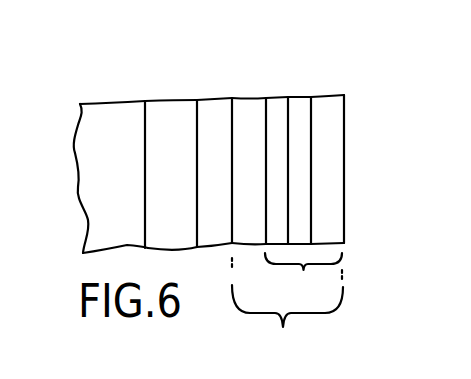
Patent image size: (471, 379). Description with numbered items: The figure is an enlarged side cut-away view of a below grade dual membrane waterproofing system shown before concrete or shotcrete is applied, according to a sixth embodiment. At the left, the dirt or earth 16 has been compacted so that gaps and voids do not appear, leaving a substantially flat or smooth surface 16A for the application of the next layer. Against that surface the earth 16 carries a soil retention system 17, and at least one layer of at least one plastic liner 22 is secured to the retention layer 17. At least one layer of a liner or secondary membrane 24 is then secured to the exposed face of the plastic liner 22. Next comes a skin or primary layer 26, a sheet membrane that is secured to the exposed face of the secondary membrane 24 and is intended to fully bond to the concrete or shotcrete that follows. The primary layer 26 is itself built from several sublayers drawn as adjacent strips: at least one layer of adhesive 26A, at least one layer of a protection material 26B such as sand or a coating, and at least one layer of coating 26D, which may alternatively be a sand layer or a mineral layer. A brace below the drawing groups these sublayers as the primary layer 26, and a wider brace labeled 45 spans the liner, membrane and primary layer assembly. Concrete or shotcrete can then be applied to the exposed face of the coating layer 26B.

The dirt or earth 16 is at (94, 124).
The substantially flat or smooth surface 16A is at (148, 125).
The soil retention system 17 is at (170, 118).
The plastic liner 22 is at (212, 112).
The secondary membrane 24 is at (250, 116).
The skin or primary layer 26 is at (303, 277).
The adhesive 26A is at (277, 110).
The protection material 26B is at (299, 108).
The coating layer 26D is at (333, 140).
The coating stack 45 is at (287, 308).